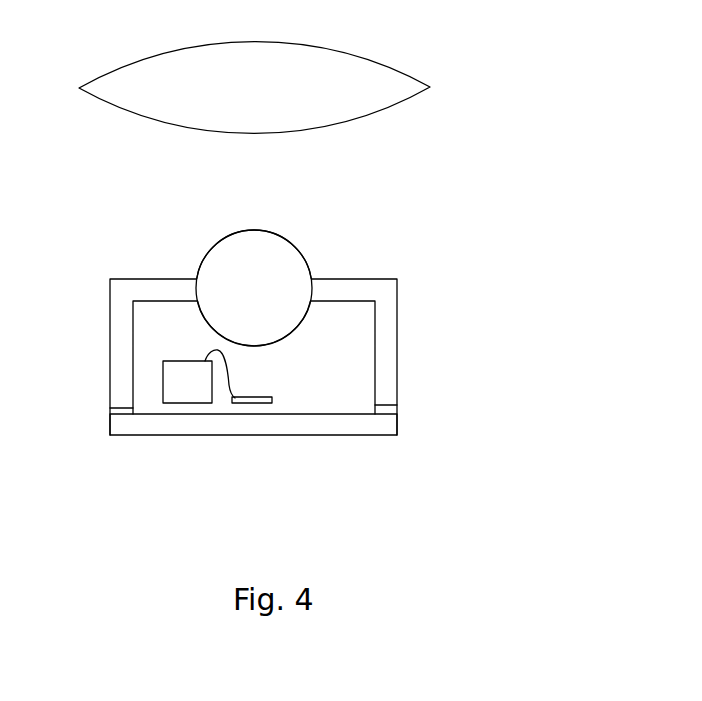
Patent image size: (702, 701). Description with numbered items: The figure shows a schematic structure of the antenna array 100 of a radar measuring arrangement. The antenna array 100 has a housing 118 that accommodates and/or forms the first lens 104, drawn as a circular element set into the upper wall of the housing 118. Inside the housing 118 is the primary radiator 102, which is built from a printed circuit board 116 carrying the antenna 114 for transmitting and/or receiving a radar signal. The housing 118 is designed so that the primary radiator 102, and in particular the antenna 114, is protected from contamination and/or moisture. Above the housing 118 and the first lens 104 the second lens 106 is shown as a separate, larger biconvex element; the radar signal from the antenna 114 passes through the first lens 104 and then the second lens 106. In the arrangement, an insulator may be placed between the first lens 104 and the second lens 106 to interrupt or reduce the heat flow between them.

The antenna array 100 is at (336, 387).
The primary radiator 102 is at (332, 452).
The first lens 104 is at (288, 243).
The second lens 106 is at (430, 87).
The antenna 114 is at (262, 403).
The printed circuit board 116 is at (180, 423).
The housing 118 is at (407, 323).